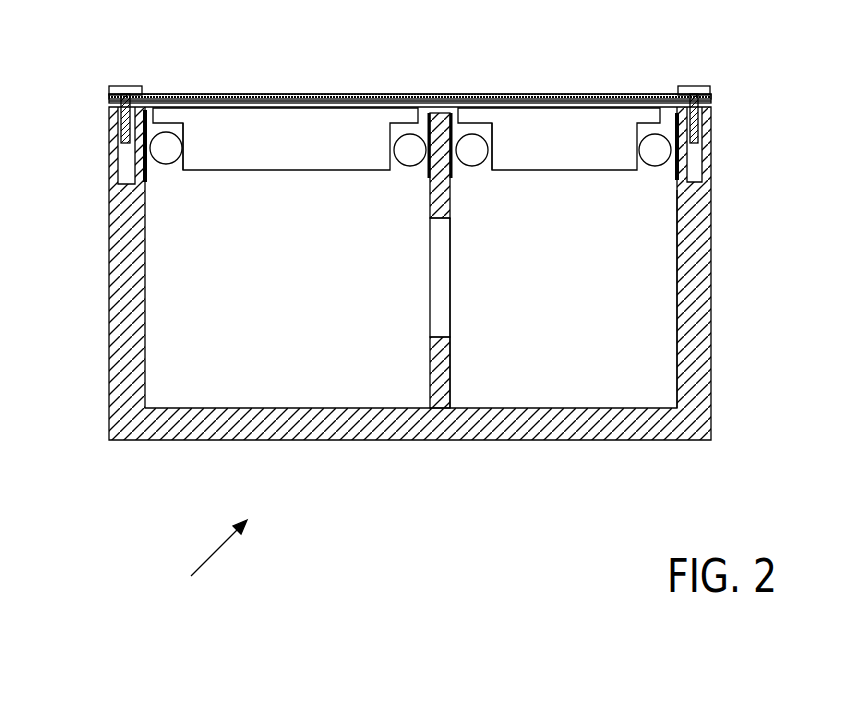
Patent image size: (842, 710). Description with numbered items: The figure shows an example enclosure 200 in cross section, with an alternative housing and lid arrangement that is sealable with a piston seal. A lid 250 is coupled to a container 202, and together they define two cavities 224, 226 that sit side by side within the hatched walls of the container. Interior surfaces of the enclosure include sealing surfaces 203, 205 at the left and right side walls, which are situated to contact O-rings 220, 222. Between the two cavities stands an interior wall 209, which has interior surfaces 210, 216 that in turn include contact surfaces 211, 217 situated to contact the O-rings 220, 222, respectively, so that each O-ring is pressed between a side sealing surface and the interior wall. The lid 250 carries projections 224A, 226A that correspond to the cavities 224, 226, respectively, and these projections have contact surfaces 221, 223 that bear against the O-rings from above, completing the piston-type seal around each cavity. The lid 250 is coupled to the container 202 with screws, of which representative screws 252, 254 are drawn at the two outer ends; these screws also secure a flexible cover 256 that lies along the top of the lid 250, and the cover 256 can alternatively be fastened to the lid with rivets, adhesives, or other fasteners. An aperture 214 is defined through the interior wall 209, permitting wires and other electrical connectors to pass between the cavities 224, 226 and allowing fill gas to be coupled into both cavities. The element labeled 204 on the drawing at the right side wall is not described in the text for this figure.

The enclosure 200 is at (198, 579).
The container 202 is at (146, 286).
The sealing surface 203 is at (148, 172).
The second side wall 204 is at (677, 252).
The sealing surface 205 is at (676, 166).
The interior wall 209 is at (430, 356).
The interior surface 210 is at (430, 210).
The contact surface 211 is at (428, 172).
The aperture 214 is at (430, 292).
The interior surface 216 is at (452, 355).
The contact surface 217 is at (453, 176).
The O-ring 220 is at (148, 168).
The contact surface 221 is at (230, 129).
The O-ring 222 is at (455, 172).
The contact surface 223 is at (545, 128).
The cavity 224 is at (237, 386).
The projection 224A is at (309, 157).
The cavity 226 is at (628, 387).
The projection 226A is at (622, 158).
The lid 250 is at (408, 112).
The screw 252 is at (124, 92).
The screw 254 is at (697, 92).
The flexible cover 256 is at (350, 96).